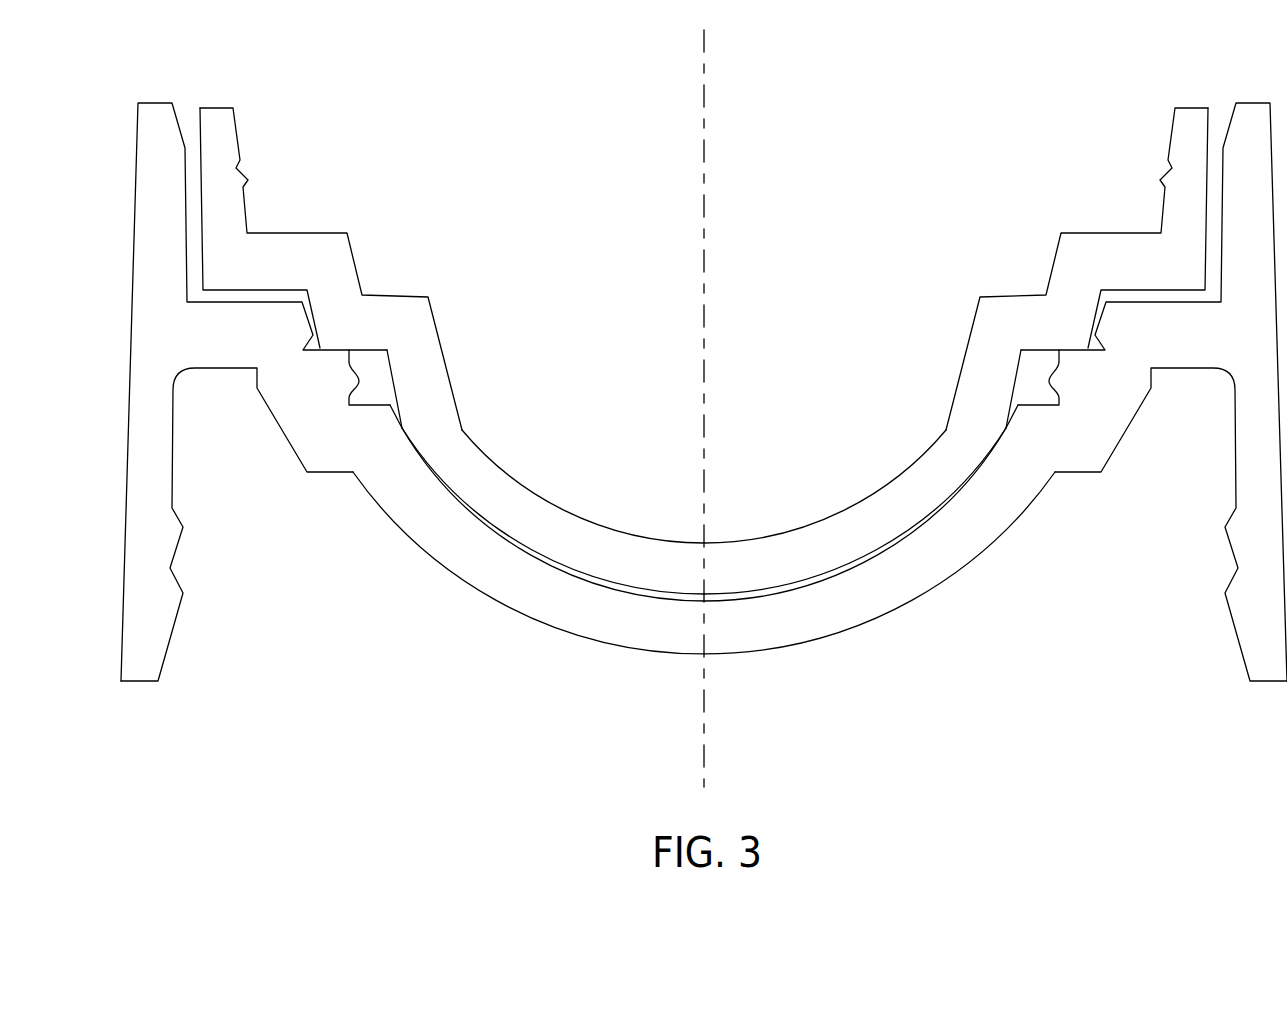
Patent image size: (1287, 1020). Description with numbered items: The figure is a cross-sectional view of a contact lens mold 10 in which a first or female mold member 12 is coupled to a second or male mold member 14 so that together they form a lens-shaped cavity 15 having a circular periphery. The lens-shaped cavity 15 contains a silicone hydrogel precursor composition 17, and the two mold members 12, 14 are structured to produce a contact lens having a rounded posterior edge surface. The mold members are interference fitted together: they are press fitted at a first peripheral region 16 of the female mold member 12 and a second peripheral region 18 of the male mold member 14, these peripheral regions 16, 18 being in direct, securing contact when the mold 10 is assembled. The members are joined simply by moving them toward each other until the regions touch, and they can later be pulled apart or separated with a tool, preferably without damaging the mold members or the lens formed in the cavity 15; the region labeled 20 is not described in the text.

The contact lens mold 10 is at (811, 215).
The first or female mold member 12 is at (862, 604).
The second or male mold member 14 is at (848, 513).
The lens-shaped cavity 15 is at (957, 497).
The first peripheral region 16 is at (400, 431).
The silicone hydrogel precursor composition 17 is at (437, 490).
The second peripheral region 18 is at (402, 431).
The lower layer line 20 is at (500, 541).